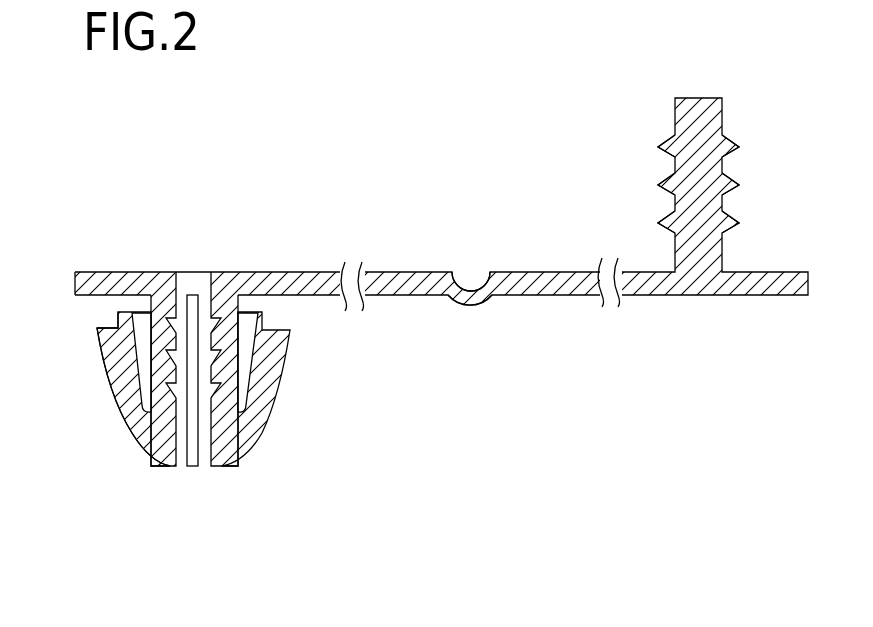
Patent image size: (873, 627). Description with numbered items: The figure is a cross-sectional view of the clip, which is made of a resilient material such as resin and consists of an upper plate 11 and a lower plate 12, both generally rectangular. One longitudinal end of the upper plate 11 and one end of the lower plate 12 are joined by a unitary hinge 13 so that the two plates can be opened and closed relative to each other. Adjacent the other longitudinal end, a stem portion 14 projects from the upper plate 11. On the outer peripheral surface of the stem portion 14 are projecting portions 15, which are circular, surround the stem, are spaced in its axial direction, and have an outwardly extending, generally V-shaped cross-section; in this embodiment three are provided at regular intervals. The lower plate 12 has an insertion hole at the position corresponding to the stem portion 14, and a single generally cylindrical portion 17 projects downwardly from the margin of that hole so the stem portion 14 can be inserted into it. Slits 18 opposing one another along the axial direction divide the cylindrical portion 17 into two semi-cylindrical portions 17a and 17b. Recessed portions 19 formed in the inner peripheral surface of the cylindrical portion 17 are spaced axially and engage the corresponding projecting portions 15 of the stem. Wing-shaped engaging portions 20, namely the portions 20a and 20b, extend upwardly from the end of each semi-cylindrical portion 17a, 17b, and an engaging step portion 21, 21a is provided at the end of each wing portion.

The upper plate 11 is at (533, 271).
The lower plate 12 is at (299, 271).
The hinge 13 is at (470, 307).
The stem portion 14 is at (723, 107).
The projecting portions 15 is at (737, 148).
The cylindrical portion 17 is at (191, 387).
The semi-cylindrical portion 17a is at (145, 402).
The semi-cylindrical portion 17b is at (236, 374).
The slits 18 is at (193, 467).
The recessed portions 19 is at (172, 326).
The wing-shaped engaging portions 20 is at (221, 447).
The wing-shaped engaging portion 20a is at (115, 432).
The wing-shaped engaging portion 20b is at (285, 347).
The engaging step portion 21 is at (103, 380).
The shoulder of grommet 21a is at (97, 330).